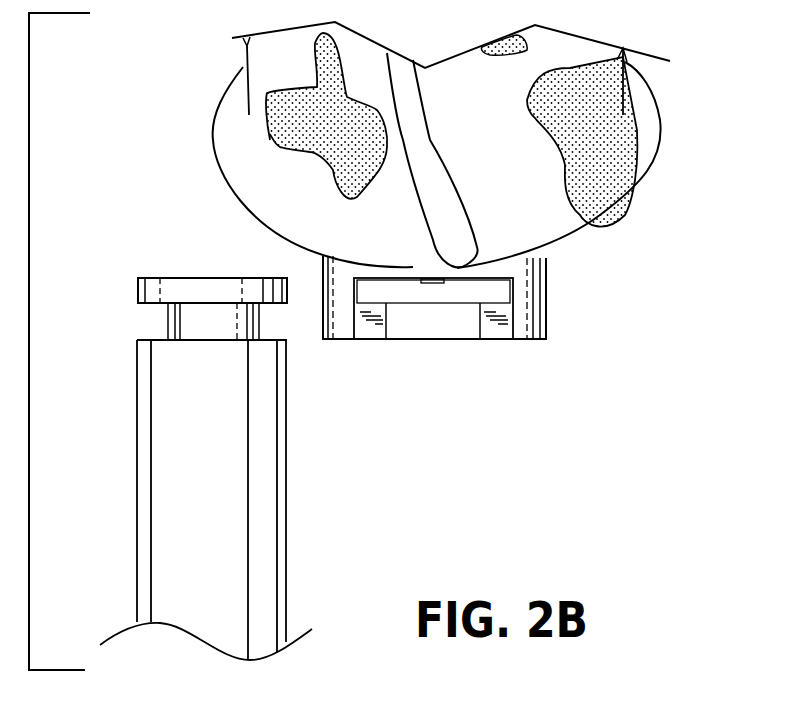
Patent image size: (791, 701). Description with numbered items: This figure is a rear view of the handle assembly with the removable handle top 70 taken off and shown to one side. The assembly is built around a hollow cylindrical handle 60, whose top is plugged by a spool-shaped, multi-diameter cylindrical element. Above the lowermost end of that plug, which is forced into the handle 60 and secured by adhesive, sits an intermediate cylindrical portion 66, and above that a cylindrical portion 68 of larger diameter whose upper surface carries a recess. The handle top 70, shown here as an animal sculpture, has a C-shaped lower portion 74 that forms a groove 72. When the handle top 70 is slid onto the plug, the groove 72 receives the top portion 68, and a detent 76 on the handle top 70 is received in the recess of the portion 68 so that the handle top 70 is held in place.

The hollow cylindrical handle 60 is at (265, 491).
The intermediate cylindrical portion 66 is at (190, 320).
The cylindrical portion 68 is at (177, 283).
The handle top 70 is at (650, 147).
The groove 72 is at (503, 287).
The C-shaped lower portion 74 is at (497, 328).
The detent 76 is at (433, 283).